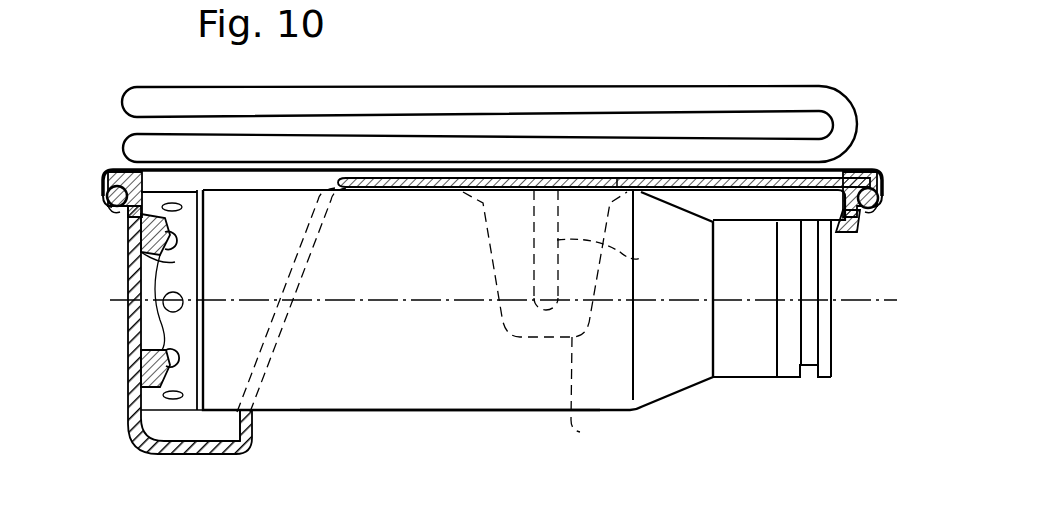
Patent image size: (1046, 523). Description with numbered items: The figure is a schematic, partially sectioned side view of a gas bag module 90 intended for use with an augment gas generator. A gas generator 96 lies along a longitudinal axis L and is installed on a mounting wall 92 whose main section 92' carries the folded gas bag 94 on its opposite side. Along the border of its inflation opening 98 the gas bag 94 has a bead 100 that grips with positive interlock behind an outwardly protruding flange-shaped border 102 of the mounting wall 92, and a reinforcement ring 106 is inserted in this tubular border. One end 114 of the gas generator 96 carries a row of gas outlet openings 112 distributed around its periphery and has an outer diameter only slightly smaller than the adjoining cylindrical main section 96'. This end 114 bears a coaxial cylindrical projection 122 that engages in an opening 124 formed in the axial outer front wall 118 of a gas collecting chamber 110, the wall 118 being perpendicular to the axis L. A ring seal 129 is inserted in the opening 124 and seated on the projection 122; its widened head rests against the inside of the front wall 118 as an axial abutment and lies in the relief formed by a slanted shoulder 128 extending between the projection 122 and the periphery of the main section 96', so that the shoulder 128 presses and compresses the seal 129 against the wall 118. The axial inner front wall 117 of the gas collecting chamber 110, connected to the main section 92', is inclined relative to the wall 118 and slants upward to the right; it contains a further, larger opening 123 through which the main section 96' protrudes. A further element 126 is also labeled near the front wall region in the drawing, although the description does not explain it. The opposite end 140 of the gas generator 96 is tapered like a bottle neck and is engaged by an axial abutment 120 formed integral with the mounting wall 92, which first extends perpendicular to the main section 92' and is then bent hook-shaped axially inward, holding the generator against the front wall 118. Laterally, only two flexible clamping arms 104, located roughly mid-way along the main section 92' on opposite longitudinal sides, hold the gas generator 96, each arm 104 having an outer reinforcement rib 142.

The gas bag module 90 is at (97, 160).
The mounting wall 92 is at (604, 114).
The main section of the mounting wall 92' is at (604, 114).
The gas bag 94 is at (732, 84).
The gas generator 96 is at (524, 331).
The cylindrical main section of the gas generator 96' is at (450, 418).
The inflation opening 98 is at (110, 184).
The bead 100 is at (112, 213).
The flange-shaped border 102 is at (120, 173).
The clamping arms 104 is at (545, 318).
The reinforcement ring 106 is at (105, 200).
The gas collecting chamber 110 is at (172, 460).
The gas outlet openings 112 is at (185, 240).
The end of the gas generator 114 is at (160, 412).
The axial inner front wall 117 is at (240, 425).
The axial outer front wall 118 is at (128, 378).
The axial abutment 120 is at (850, 236).
The cylindrical projection 122 is at (135, 285).
The further opening 123 is at (333, 190).
The opening 124 is at (140, 247).
The flange 126 is at (155, 200).
The slanted shoulder 128 is at (145, 355).
The ring seal 129 is at (185, 262).
The end of the gas generator 140 is at (745, 365).
The reinforcement rib 142 is at (640, 258).
The longitudinal axis L is at (877, 302).